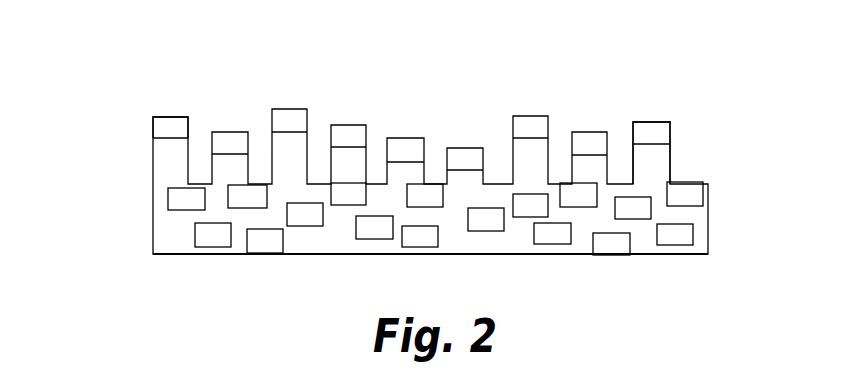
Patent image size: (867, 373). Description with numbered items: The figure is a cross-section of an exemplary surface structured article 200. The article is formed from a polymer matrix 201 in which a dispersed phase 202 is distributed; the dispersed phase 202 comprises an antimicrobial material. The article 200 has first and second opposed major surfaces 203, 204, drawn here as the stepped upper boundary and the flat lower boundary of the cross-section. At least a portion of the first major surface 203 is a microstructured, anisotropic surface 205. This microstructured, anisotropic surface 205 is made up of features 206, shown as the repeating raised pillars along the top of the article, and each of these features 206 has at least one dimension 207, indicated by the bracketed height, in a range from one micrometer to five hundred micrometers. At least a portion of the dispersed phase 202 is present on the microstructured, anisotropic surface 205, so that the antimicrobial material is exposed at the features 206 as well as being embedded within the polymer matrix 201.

The surface structured article 200 is at (759, 26).
The polymer matrix 201 is at (167, 236).
The dispersed phase 202 is at (167, 201).
The first major surface 203 is at (411, 127).
The second major surface 204 is at (430, 276).
The microstructured, anisotropic surface 205 is at (152, 115).
The features 206 is at (682, 110).
The dimension 207 is at (717, 108).